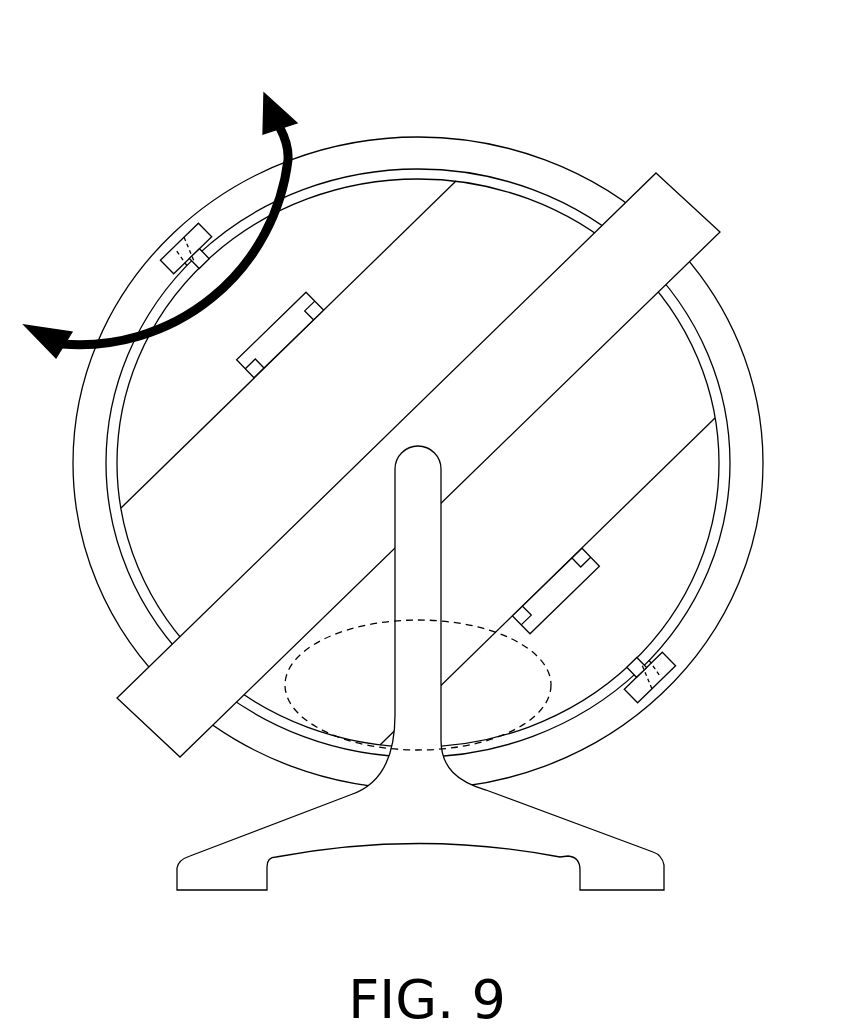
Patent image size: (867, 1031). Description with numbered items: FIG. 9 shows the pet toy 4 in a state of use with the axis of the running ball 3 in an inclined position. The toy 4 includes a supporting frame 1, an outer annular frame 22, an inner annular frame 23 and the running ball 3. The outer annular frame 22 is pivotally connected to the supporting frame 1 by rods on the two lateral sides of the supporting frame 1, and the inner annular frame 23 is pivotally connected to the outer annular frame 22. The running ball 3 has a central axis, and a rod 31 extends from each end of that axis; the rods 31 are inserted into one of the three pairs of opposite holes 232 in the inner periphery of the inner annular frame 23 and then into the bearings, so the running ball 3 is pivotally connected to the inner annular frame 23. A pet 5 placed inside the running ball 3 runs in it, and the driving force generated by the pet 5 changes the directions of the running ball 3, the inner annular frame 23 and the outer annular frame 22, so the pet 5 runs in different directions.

The supporting frame 1 is at (618, 860).
The running ball 3 is at (652, 380).
The toy 4 is at (748, 680).
The pet 5 is at (315, 704).
The outer annular frame 22 is at (657, 237).
The inner annular frame 23 is at (499, 158).
The rod 31 is at (190, 259).
The hole 232 is at (204, 226).